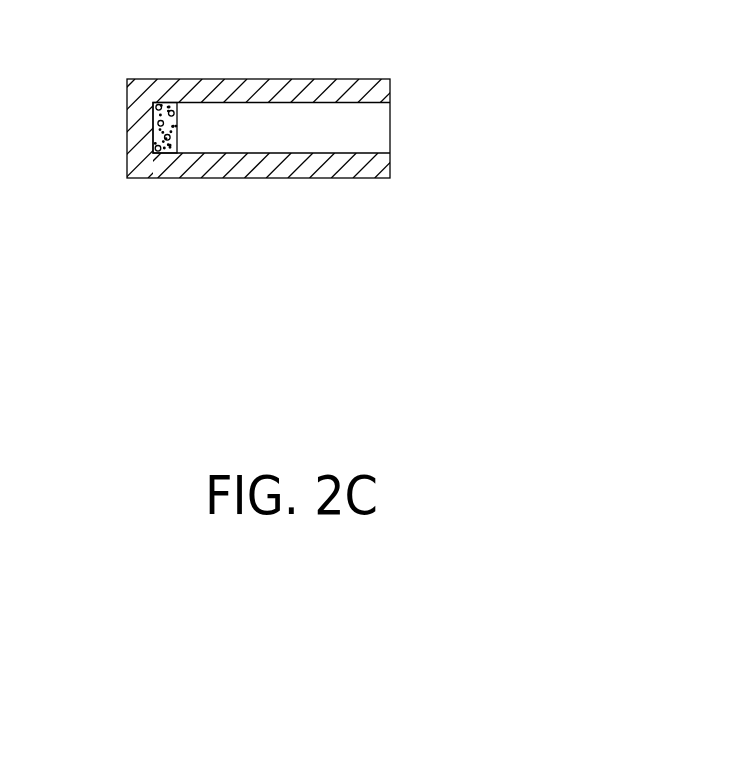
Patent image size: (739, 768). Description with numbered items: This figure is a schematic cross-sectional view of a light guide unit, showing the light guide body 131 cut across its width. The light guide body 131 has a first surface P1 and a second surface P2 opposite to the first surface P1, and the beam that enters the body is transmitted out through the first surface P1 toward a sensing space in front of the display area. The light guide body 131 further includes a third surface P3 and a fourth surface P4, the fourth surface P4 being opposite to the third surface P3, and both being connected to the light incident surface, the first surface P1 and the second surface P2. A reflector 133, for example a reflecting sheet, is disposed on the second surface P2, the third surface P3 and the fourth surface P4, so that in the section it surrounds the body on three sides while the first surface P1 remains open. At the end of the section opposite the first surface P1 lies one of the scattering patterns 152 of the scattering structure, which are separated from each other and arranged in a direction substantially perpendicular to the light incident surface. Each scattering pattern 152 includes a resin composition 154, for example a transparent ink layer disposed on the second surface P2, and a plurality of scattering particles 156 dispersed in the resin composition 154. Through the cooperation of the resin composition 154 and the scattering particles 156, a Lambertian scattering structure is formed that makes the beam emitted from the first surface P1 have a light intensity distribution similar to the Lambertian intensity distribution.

The light guide body 131 is at (325, 117).
The reflector 133 is at (331, 163).
The scattering pattern 152 is at (170, 191).
The resin composition 154 is at (176, 146).
The scattering particles 156 is at (161, 151).
The first surface P1 is at (393, 128).
The second surface P2 is at (175, 130).
The third surface P3 is at (257, 101).
The fourth surface P4 is at (259, 155).